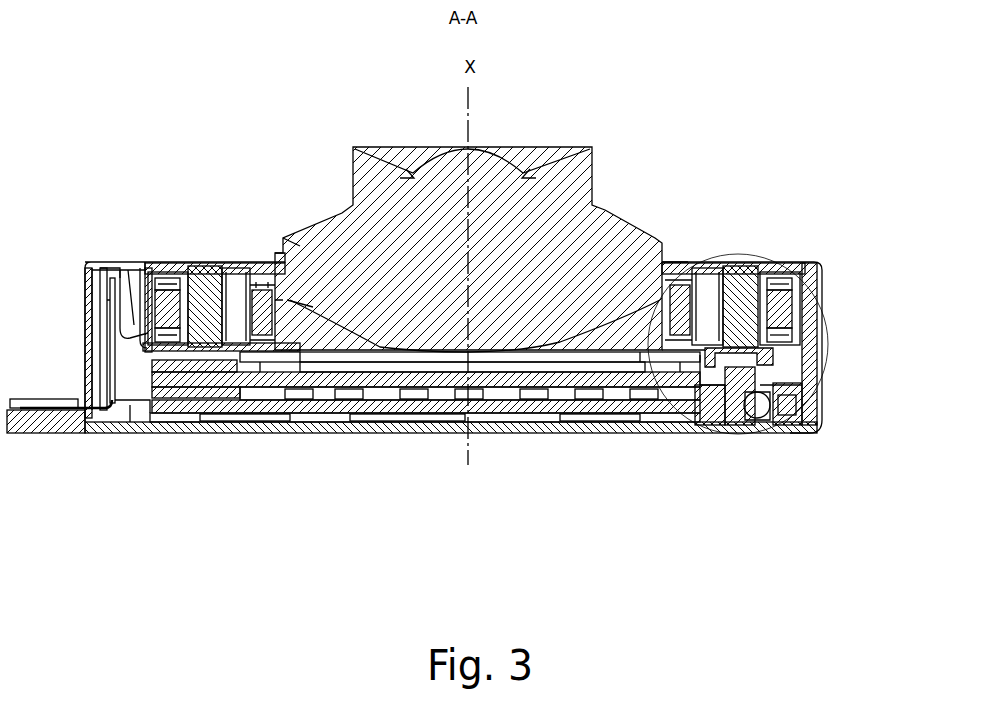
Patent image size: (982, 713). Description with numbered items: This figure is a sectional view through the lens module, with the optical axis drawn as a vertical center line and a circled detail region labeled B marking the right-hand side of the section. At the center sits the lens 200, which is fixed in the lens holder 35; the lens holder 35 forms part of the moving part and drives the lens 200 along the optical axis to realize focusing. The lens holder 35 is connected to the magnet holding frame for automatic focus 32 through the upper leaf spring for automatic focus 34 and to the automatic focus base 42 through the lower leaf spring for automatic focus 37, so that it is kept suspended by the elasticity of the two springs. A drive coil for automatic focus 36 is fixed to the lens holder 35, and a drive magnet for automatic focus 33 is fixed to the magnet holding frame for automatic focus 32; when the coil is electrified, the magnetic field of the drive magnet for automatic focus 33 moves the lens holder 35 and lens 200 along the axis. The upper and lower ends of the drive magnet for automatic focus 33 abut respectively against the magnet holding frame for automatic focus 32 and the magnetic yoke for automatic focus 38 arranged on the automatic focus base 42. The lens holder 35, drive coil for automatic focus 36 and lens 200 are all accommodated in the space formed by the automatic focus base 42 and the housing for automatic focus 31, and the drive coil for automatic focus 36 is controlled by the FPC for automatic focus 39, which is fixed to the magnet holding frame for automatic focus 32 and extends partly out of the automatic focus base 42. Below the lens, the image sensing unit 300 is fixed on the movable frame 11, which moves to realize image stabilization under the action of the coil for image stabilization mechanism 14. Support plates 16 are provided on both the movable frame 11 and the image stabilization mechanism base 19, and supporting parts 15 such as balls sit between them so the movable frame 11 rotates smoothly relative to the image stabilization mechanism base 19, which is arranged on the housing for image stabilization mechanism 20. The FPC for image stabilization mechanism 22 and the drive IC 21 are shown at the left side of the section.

The lens 200 is at (600, 190).
The image sensing unit 300 is at (510, 385).
The movable frame 11 is at (790, 380).
The coil for image stabilization mechanism 14 is at (360, 405).
The supporting part 15 is at (815, 430).
The support plate 16 is at (760, 420).
The image stabilization mechanism base 19 is at (80, 418).
The housing for image stabilization mechanism 20 is at (823, 400).
The drive IC 21 is at (56, 403).
The FPC for image stabilization mechanism 22 is at (103, 265).
The housing for automatic focus 31 is at (188, 262).
The magnet holding frame for automatic focus 32 is at (233, 268).
The drive magnet for automatic focus 33 is at (740, 280).
The upper leaf spring for automatic focus 34 is at (679, 278).
The lens holder 35 is at (262, 290).
The drive coil for automatic focus 36 is at (778, 310).
The lower leaf spring for automatic focus 37 is at (700, 420).
The magnetic yoke for automatic focus 38 is at (788, 342).
The FPC for automatic focus 39 is at (128, 338).
The automatic focus base 42 is at (808, 270).
The detail region B is at (712, 256).